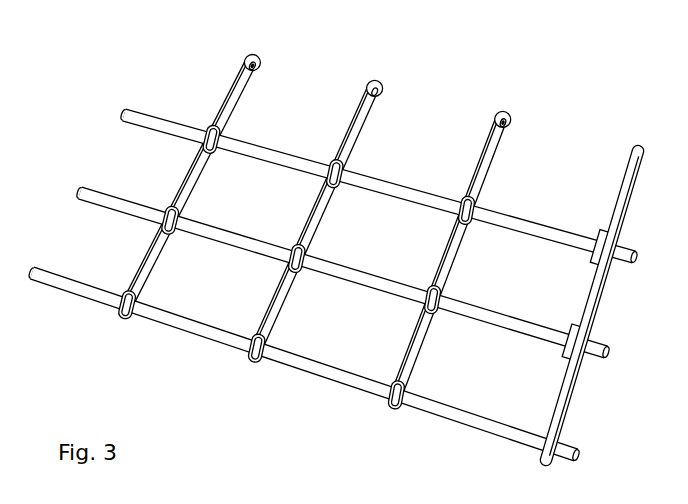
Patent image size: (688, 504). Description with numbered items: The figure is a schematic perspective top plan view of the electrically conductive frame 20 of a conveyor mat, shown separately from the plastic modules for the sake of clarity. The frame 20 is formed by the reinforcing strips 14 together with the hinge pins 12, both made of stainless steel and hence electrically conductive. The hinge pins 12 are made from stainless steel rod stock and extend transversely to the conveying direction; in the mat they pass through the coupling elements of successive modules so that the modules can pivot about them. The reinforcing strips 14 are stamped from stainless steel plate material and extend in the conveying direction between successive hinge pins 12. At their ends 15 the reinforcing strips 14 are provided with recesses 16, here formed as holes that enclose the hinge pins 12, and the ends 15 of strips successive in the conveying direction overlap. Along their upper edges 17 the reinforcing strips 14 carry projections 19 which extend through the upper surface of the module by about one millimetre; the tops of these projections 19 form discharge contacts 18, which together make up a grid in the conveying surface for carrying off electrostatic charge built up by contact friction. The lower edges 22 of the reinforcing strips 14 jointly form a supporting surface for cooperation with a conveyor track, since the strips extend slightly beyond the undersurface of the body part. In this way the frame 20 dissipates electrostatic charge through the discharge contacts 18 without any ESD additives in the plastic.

The hinge pin 12 is at (627, 262).
The reinforcing strip 14 is at (251, 101).
The end 15 is at (263, 68).
The recess 16 is at (262, 62).
The upper edge 17 is at (228, 105).
The discharge contact 18 is at (247, 52).
The projection 19 is at (259, 53).
The electrically conductive frame 20 is at (611, 130).
The lower edge 22 is at (238, 115).